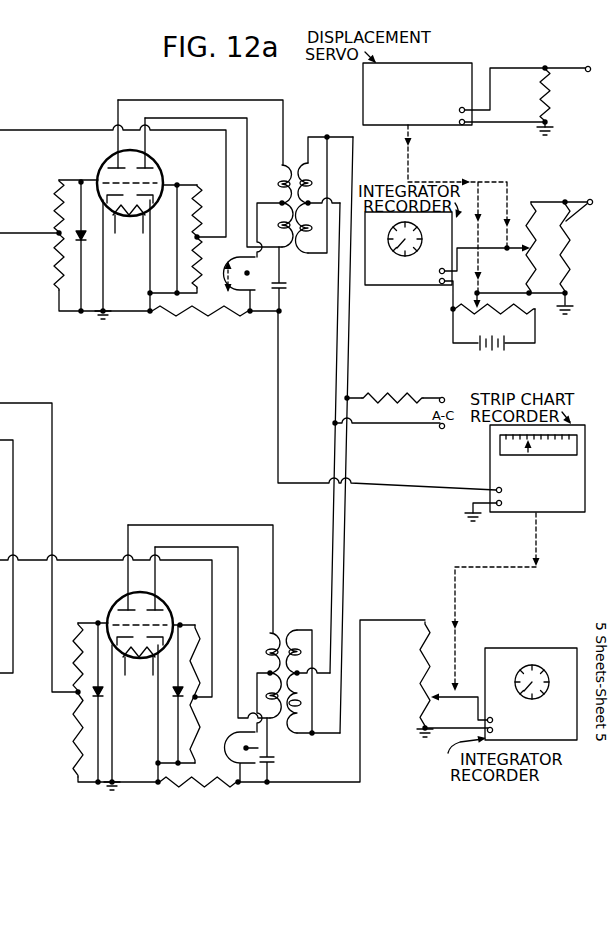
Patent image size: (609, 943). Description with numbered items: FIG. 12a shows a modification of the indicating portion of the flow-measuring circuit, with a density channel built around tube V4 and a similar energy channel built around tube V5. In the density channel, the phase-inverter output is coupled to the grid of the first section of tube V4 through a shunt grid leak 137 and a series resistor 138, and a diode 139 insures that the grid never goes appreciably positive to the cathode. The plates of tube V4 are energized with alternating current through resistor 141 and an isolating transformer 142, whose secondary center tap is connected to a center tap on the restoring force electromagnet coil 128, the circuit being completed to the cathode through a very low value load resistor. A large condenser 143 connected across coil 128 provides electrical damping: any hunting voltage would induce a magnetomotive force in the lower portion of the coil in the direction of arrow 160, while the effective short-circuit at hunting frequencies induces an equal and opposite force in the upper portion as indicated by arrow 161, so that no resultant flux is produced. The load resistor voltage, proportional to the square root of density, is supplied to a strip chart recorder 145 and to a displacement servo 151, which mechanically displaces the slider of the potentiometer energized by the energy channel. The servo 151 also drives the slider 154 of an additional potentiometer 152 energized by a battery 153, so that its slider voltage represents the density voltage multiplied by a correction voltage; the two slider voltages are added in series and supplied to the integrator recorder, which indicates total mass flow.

The tube V4 is at (103, 163).
The tube V5 is at (112, 607).
The shunt grid leak 137 is at (56, 276).
The series resistor 138 is at (56, 208).
The diode 139 is at (84, 237).
The resistor 141 is at (392, 376).
The isolating transformer 142 is at (298, 128).
The condenser 143 is at (282, 289).
The strip chart recorder 145 is at (495, 454).
The displacement servo 151 is at (455, 49).
The additional potentiometer 152 is at (502, 315).
The battery 153 is at (506, 350).
The slider 154 is at (478, 292).
The arrow 160 is at (227, 288).
The arrow 161 is at (227, 262).
The restoring force electromagnet coil 128 is at (248, 272).